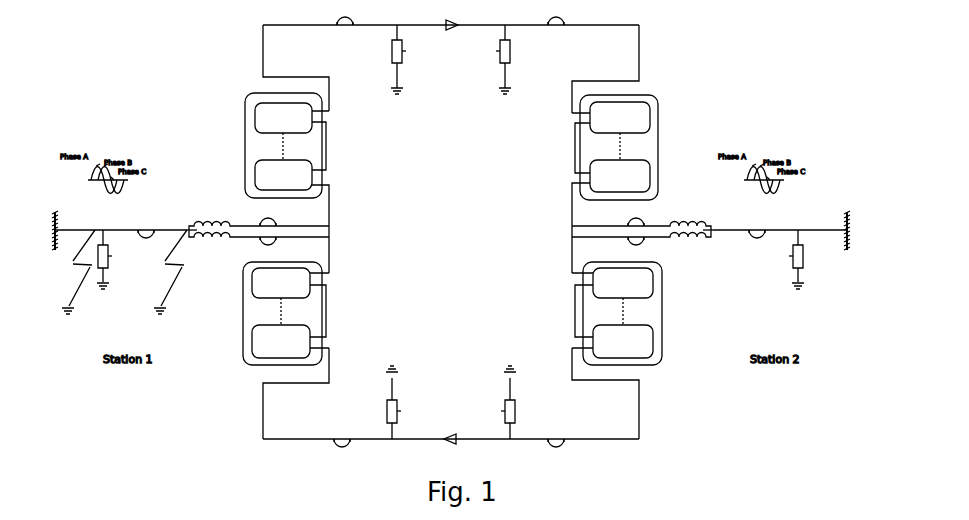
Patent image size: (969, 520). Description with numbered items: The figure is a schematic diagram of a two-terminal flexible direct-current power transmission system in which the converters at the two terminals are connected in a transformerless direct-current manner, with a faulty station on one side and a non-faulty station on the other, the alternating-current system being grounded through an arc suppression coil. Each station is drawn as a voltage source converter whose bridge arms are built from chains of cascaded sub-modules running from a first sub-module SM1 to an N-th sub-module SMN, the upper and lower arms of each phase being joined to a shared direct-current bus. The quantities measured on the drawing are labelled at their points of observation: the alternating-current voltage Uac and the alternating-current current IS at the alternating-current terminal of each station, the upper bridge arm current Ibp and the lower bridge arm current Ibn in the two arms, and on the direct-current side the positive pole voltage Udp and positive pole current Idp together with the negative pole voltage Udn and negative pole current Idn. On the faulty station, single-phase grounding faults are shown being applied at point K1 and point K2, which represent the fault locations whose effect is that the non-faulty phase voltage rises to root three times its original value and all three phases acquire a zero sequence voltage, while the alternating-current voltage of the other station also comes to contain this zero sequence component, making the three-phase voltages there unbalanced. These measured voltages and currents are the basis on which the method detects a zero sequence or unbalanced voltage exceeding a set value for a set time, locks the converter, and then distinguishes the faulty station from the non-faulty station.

The positive pole DC current Idp is at (451, 32).
The positive pole DC voltage Udp is at (452, 59).
The negative pole DC current Idn is at (449, 433).
The negative pole DC voltage Udn is at (452, 402).
The upper bridge arm current Ibp is at (451, 218).
The lower bridge arm current Ibn is at (451, 249).
The AC voltage Uac is at (451, 250).
The AC current IS is at (451, 225).
The fault point k1 K1 is at (78, 272).
The fault point k2 K2 is at (170, 272).
The sub-module 1 SM1 is at (449, 195).
The sub-module N SMN is at (452, 259).